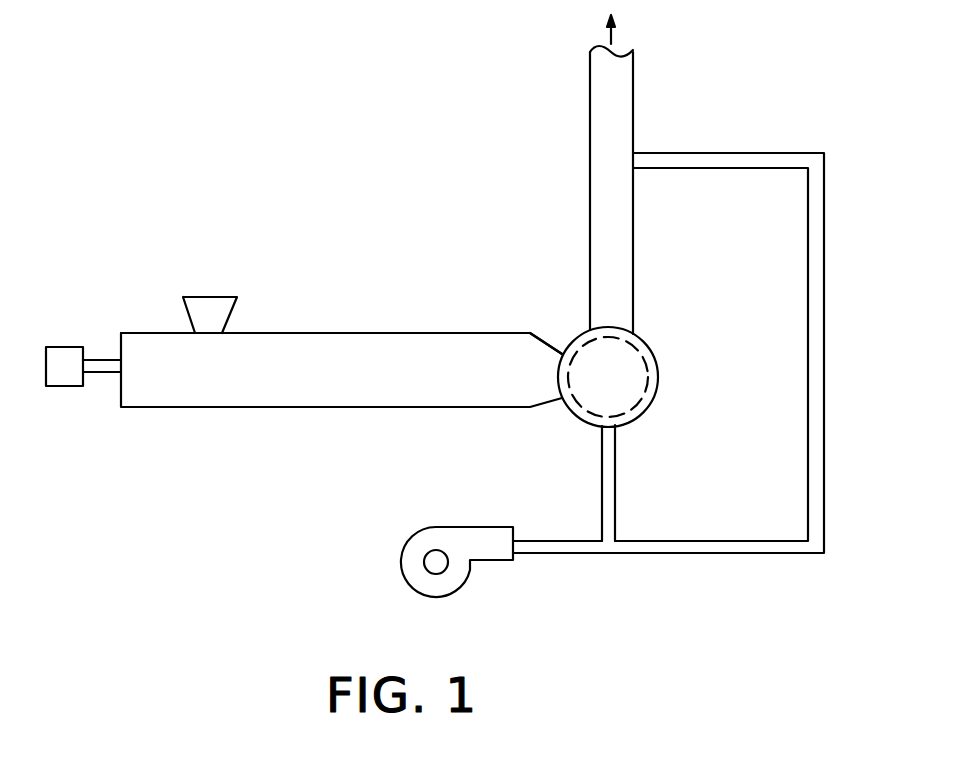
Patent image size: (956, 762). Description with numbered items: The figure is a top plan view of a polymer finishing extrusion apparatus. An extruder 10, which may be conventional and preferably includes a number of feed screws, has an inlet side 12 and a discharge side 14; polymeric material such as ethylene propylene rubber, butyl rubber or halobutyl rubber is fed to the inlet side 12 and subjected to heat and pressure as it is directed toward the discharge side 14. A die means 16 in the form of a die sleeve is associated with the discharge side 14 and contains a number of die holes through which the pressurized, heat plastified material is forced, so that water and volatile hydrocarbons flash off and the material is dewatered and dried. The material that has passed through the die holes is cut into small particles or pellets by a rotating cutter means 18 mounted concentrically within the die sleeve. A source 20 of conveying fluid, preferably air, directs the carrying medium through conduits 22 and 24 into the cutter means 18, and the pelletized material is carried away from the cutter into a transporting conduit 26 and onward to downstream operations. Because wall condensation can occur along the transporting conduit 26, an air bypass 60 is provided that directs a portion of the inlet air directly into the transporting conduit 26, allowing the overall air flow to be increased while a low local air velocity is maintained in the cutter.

The extruder 10 is at (307, 352).
The inlet side 12 is at (121, 358).
The discharge side 14 is at (561, 352).
The die means 16 is at (576, 420).
The rotating cutter means 18 is at (645, 345).
The source of conveying fluid 20 is at (437, 527).
The conduit 22 is at (536, 548).
The conduit 24 is at (614, 490).
The transporting conduit 26 is at (596, 155).
The air bypass 60 is at (820, 340).